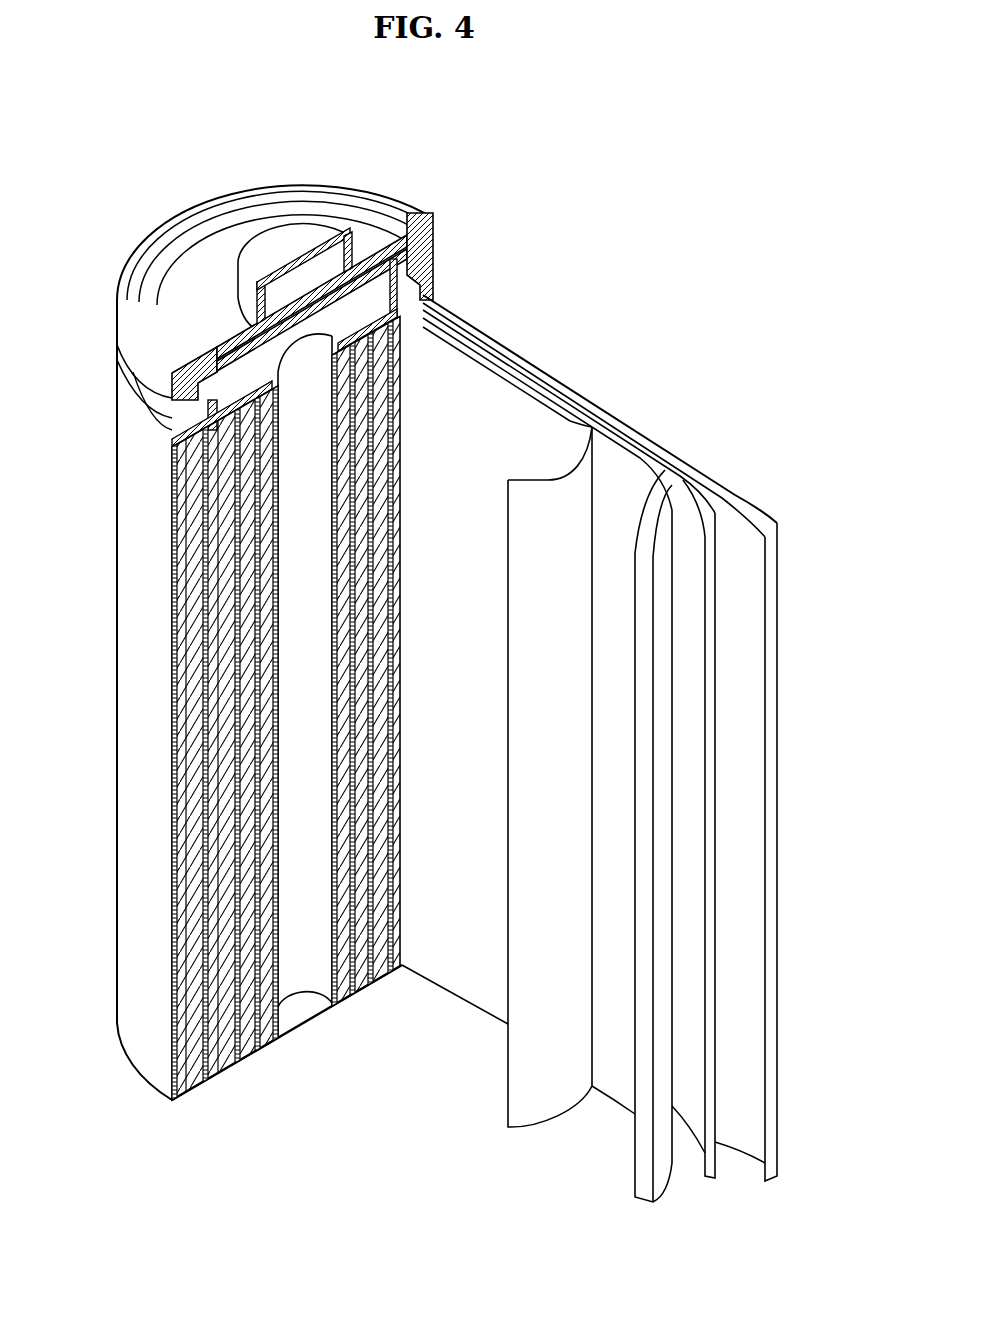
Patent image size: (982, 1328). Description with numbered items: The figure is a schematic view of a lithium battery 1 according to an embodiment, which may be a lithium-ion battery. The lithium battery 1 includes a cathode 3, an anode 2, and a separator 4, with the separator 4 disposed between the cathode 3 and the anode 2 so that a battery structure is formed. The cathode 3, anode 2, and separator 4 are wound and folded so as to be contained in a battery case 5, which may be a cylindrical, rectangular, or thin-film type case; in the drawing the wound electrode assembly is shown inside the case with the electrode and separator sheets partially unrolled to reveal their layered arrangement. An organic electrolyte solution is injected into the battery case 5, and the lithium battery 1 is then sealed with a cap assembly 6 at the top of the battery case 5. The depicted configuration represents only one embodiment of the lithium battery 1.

The lithium battery 1 is at (612, 210).
The anode 2 is at (748, 494).
The cathode 3 is at (657, 490).
The separator 4 is at (553, 485).
The battery case 5 is at (125, 698).
The cap assembly 6 is at (268, 238).